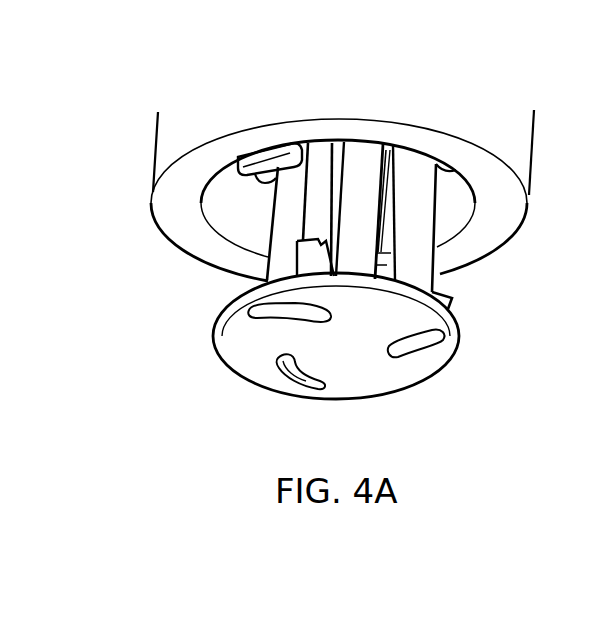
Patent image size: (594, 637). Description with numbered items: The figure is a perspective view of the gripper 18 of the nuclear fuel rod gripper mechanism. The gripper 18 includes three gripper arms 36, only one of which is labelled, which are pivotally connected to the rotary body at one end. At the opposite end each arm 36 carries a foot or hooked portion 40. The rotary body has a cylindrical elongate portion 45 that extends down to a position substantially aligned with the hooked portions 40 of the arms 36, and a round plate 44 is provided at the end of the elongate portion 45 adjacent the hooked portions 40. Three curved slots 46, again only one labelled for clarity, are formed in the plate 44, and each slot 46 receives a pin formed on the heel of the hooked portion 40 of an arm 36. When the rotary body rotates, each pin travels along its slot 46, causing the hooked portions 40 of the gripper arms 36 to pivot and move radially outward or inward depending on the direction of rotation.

The gripper 18 is at (149, 271).
The gripper arm 36 is at (413, 237).
The hooked portion 40 is at (305, 257).
The plate 44 is at (383, 376).
The elongate portion 45 is at (363, 188).
The curved slot 46 is at (430, 340).